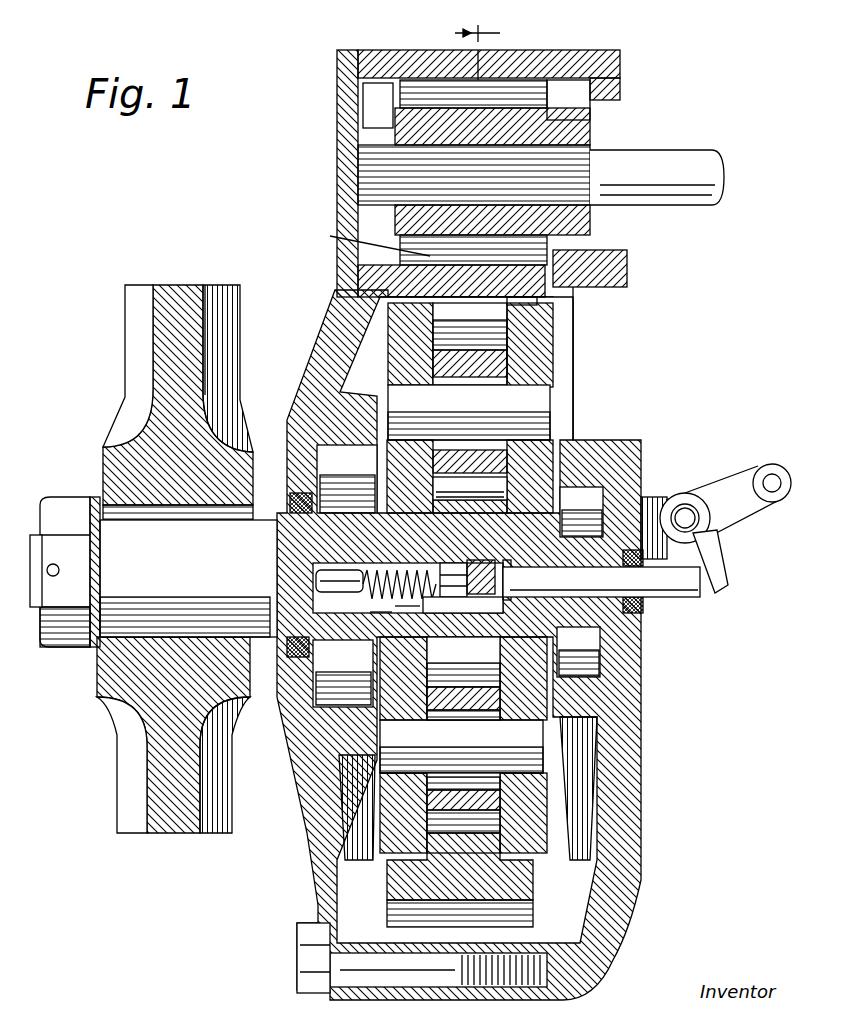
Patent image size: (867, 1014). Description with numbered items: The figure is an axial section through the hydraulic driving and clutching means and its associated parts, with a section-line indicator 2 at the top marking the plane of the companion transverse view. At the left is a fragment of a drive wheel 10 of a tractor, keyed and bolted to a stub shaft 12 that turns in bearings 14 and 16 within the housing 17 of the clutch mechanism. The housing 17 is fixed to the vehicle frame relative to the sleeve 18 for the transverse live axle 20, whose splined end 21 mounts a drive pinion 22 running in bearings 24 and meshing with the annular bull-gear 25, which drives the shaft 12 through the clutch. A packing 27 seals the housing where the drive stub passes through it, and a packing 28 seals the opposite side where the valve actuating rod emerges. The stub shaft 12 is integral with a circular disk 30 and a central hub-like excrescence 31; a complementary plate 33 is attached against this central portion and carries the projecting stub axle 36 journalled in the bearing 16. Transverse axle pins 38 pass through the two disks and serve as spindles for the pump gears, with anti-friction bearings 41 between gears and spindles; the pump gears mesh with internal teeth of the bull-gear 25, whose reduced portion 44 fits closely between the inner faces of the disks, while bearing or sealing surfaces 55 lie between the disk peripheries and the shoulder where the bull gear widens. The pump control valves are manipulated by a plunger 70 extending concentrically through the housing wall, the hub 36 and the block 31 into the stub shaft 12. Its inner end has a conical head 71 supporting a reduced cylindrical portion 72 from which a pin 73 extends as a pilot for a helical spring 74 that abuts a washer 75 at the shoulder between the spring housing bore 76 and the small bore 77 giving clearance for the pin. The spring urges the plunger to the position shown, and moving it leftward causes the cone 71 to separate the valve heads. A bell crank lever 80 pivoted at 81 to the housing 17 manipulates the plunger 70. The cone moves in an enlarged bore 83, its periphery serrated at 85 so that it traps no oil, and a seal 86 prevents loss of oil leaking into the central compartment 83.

The section line 2 is at (477, 41).
The drive wheel 10 is at (173, 300).
The stub shaft 12 is at (130, 612).
The bearing 14 is at (335, 456).
The bearing 16 is at (585, 488).
The housing 17 is at (630, 702).
The sleeve 18 is at (625, 272).
The transverse live axle 20 is at (675, 158).
The splined end 21 is at (563, 162).
The drive pinion 22 is at (508, 120).
The bearings 24 is at (583, 95).
The bull-gear 25 is at (361, 238).
The packing 27 is at (300, 500).
The packing 28 is at (645, 607).
The circular disk 30 is at (398, 356).
The central hub-like excrescence 31 is at (470, 488).
The complementary plate 33 is at (550, 345).
The stub axle 36 is at (595, 548).
The transverse axle pins 38 is at (540, 396).
The anti-friction bearings 41 is at (484, 445).
The reduced portion of bull-gear 44 is at (465, 320).
The bearing surfaces 55 is at (548, 300).
The plunger 70 is at (705, 597).
The conical head 71 is at (483, 560).
The reduced cylindrical portion 72 is at (452, 563).
The pin 73 is at (400, 568).
The helical spring 74 is at (408, 612).
The washer 75 is at (360, 578).
The spring housing bore 76 is at (376, 614).
The small bore 77 is at (340, 593).
The bell crank lever 80 is at (700, 505).
The pivot 81 is at (700, 520).
The enlarged bore 83 is at (452, 613).
The serrations 85 is at (601, 582).
The seal 86 is at (515, 565).